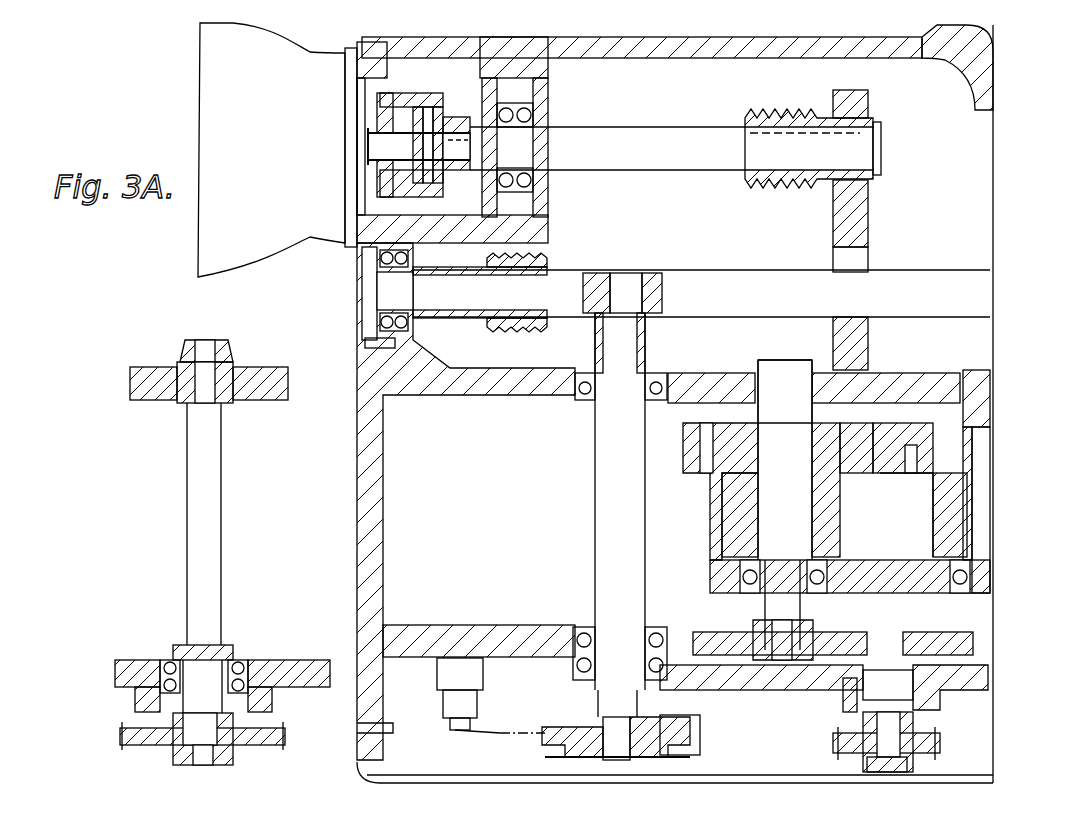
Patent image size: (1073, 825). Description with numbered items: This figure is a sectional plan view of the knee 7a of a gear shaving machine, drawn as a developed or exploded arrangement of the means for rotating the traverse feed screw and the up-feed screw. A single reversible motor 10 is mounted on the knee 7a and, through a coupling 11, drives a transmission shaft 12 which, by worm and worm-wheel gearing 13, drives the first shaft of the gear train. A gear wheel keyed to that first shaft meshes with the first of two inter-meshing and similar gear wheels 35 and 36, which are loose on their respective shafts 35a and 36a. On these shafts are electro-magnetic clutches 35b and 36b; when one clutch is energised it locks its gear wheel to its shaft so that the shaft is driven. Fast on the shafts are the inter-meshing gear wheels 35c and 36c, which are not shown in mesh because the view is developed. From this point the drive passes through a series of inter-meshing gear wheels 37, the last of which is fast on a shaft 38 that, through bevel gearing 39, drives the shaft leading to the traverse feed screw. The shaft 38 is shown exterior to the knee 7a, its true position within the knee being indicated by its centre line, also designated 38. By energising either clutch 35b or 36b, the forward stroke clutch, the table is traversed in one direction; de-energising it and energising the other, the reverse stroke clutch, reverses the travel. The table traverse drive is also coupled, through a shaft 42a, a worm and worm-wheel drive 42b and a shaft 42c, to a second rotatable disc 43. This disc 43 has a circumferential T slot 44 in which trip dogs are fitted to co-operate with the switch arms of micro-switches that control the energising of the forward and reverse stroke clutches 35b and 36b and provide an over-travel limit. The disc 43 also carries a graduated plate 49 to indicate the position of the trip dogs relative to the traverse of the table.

The knee 7a is at (360, 529).
The reversible motor 10 is at (248, 147).
The coupling 11 is at (441, 100).
The transmission shaft 12 is at (680, 138).
The worm and worm-wheel gearing 13 is at (790, 120).
The gear wheel 35 is at (888, 473).
The shaft 35a is at (983, 453).
The electro-magnetic clutch 35b is at (950, 525).
The gear wheel 35c is at (927, 640).
The gear wheel 36 is at (705, 491).
The shaft 36a is at (805, 468).
The electro-magnetic clutch 36b is at (743, 505).
The gear wheel 36c is at (848, 628).
The inter-meshing gear wheels 37 is at (940, 747).
The shaft 38 is at (208, 483).
The bevel gearing 39 is at (230, 338).
The shaft 42a is at (778, 278).
The worm and worm-wheel drive 42b is at (595, 273).
The shaft 42c is at (607, 465).
The second rotatable disc 43 is at (582, 728).
The circumferential T slot 44 is at (690, 737).
The graduated plate 49 is at (568, 750).